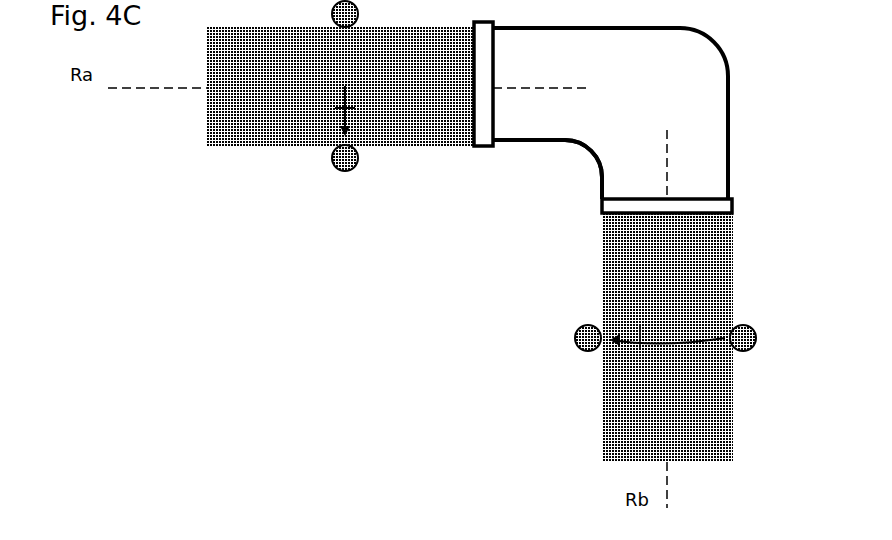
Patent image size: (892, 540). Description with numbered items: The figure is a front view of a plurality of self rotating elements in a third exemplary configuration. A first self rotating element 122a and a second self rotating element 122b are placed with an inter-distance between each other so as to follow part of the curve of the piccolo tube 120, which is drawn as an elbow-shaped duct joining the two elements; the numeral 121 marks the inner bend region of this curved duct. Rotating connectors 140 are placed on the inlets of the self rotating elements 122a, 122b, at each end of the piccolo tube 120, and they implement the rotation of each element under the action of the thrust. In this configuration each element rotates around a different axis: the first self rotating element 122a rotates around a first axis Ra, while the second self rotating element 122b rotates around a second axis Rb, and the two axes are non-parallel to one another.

The piccolo tube 120 is at (731, 107).
The inner bend of elbow duct 121 is at (583, 150).
The first self rotating element 122a is at (265, 212).
The second self rotating element 122b is at (574, 379).
The rotating connector 140 is at (490, 146).